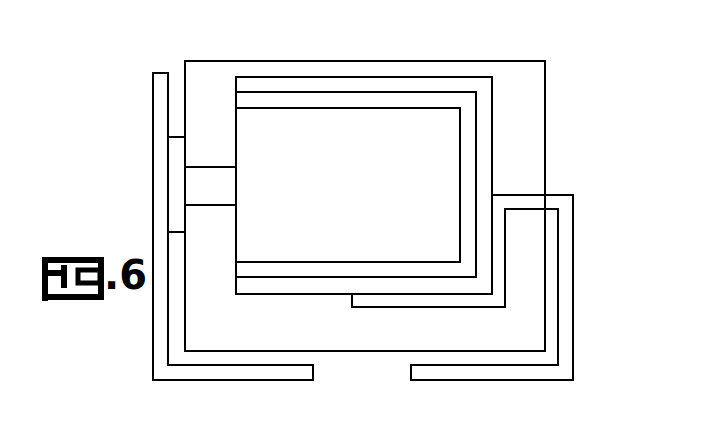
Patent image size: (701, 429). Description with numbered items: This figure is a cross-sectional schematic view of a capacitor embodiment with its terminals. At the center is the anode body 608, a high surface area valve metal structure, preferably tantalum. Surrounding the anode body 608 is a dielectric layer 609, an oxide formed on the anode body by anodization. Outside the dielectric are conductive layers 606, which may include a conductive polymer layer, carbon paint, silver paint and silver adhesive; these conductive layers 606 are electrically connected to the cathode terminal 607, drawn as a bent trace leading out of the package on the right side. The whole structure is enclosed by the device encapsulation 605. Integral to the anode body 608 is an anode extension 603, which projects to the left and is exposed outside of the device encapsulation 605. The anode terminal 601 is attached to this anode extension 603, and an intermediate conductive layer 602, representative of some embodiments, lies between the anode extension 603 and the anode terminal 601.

The anode terminal 601 is at (157, 372).
The intermediate conductive layer 602 is at (170, 165).
The anode extension 603 is at (205, 192).
The device encapsulation 605 is at (462, 70).
The conductive layers 606 is at (485, 117).
The cathode terminal 607 is at (569, 254).
The anode body 608 is at (380, 208).
The dielectric layer 609 is at (307, 268).